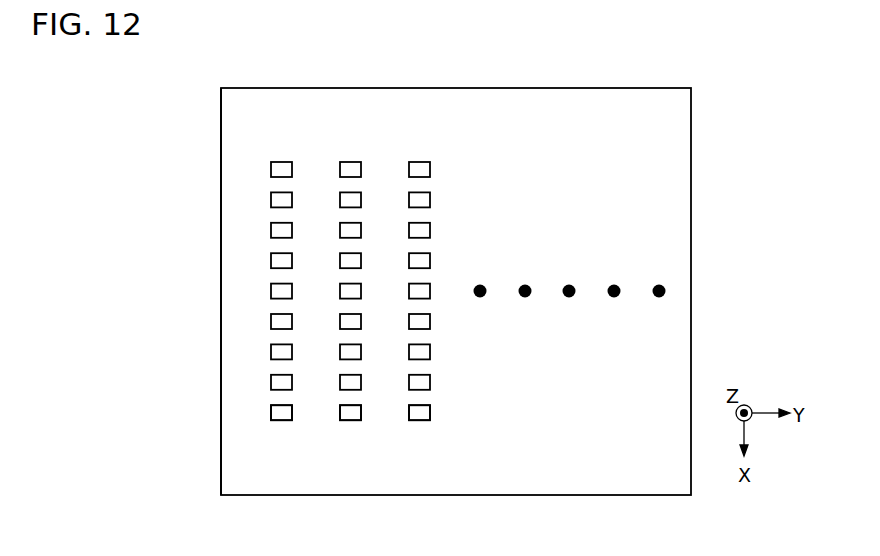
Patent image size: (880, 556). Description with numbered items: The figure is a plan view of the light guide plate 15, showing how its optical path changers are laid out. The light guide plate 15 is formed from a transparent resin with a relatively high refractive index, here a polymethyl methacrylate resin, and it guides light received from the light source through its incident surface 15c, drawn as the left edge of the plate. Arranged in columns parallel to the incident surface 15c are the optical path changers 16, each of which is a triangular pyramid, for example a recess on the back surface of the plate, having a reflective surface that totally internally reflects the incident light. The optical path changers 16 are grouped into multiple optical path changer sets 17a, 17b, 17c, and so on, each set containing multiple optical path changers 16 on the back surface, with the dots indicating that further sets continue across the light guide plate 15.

The light guide plate 15 is at (242, 376).
The incident surface 15c is at (221, 292).
The optical path changer 16 is at (283, 420).
The optical path changer set 17a is at (283, 158).
The optical path changer set 17b is at (352, 158).
The optical path changer set 17c is at (420, 158).